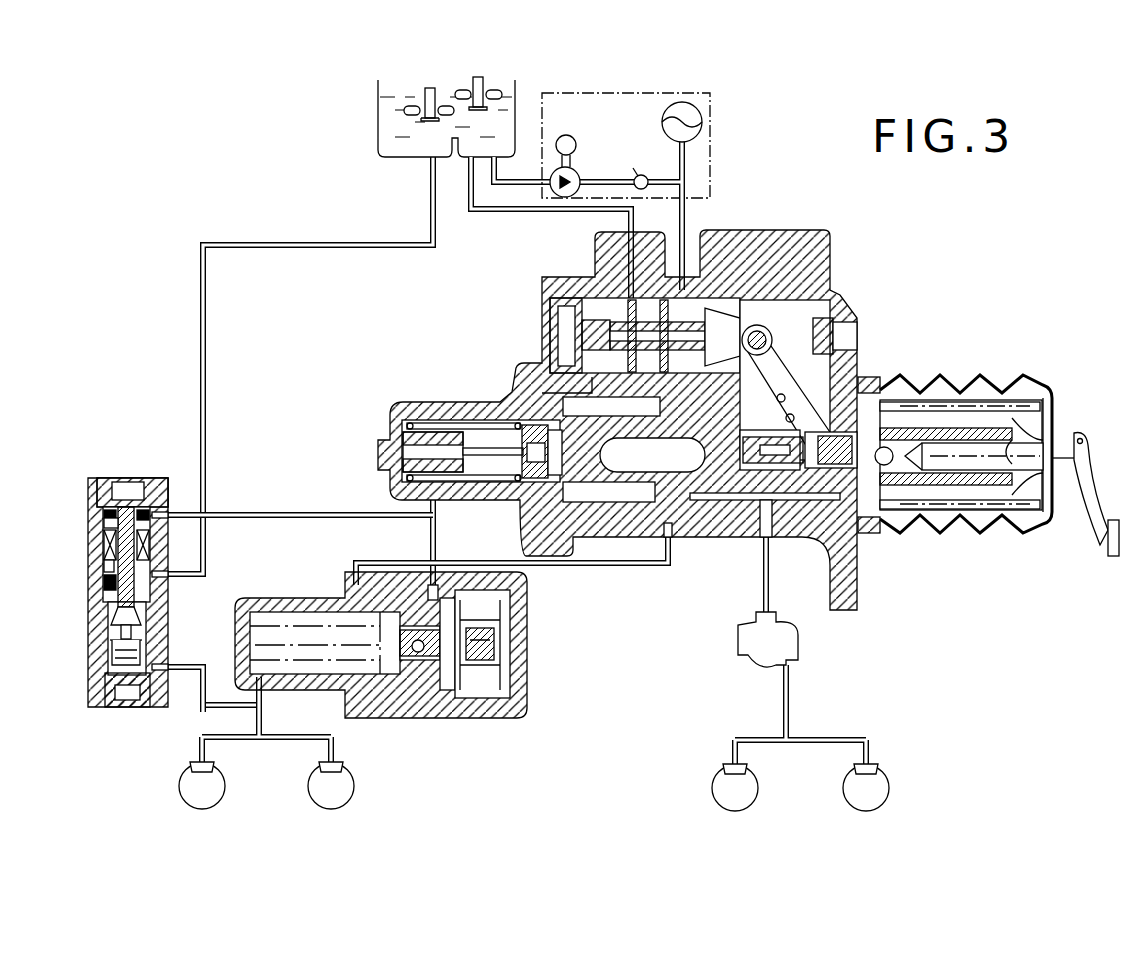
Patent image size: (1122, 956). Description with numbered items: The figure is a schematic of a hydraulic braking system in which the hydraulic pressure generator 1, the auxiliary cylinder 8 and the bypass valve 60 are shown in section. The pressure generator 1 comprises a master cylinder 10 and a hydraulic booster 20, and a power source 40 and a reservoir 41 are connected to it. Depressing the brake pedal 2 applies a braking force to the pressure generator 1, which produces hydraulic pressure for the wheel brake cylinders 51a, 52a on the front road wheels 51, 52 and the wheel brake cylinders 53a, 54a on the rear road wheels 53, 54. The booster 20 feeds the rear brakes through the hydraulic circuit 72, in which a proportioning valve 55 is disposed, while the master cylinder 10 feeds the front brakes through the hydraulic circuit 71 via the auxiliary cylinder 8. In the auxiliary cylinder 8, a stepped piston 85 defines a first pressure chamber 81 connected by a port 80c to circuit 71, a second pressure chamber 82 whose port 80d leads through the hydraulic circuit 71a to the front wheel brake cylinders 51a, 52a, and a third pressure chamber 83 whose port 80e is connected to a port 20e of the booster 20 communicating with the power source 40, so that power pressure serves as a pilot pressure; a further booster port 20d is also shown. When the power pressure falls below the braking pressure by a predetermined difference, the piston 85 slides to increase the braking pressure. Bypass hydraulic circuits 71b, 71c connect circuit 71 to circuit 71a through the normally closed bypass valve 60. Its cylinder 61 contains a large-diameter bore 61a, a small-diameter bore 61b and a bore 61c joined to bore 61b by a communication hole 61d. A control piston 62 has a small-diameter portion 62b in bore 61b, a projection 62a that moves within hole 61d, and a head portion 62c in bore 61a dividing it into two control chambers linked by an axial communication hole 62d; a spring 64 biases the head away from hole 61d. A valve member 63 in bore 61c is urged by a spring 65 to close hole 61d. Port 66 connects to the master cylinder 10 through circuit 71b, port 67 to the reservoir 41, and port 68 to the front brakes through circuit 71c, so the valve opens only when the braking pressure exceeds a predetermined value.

The hydraulic pressure generator 1 is at (905, 366).
The brake pedal 2 is at (1100, 537).
The auxiliary cylinder 8 is at (414, 637).
The master cylinder 10 is at (455, 398).
The hydraulic booster 20 is at (641, 420).
The port 20d is at (770, 525).
The port 20e is at (670, 528).
The power source 40 is at (735, 130).
The reservoir 41 is at (392, 155).
The front road wheel 51 is at (222, 786).
The wheel brake cylinder 51a is at (212, 762).
The front road wheel 52 is at (352, 786).
The wheel brake cylinder 52a is at (343, 762).
The rear road wheel 53 is at (758, 790).
The wheel brake cylinder 53a is at (722, 764).
The rear road wheel 54 is at (888, 790).
The wheel brake cylinder 54a is at (878, 764).
The proportioning valve 55 is at (800, 642).
The bypass valve 60 is at (131, 560).
The cylinder 61 is at (100, 478).
The large-diameter bore 61a is at (102, 540).
The small-diameter bore 61b is at (102, 582).
The bore 61c is at (115, 662).
The communication hole 61d is at (108, 640).
The control piston 62 is at (110, 593).
The projection 62a is at (121, 628).
The small-diameter portion 62b is at (105, 565).
The head portion 62c is at (104, 512).
The communication hole 62d is at (104, 522).
The valve member 63 is at (142, 640).
The spring 64 is at (150, 545).
The spring 65 is at (112, 665).
The port 66 is at (165, 512).
The port 67 is at (165, 580).
The port 68 is at (160, 667).
The hydraulic circuit 71 is at (437, 508).
The hydraulic circuit 71a is at (254, 708).
The bypass hydraulic circuit 71b is at (290, 518).
The bypass hydraulic circuit 71c is at (200, 707).
The hydraulic circuit 72 is at (771, 590).
The port 80c is at (432, 585).
The port 80d is at (265, 688).
The port 80e is at (350, 580).
The first pressure chamber 81 is at (448, 610).
The second pressure chamber 82 is at (290, 618).
The third pressure chamber 83 is at (398, 600).
The piston 85 is at (378, 700).